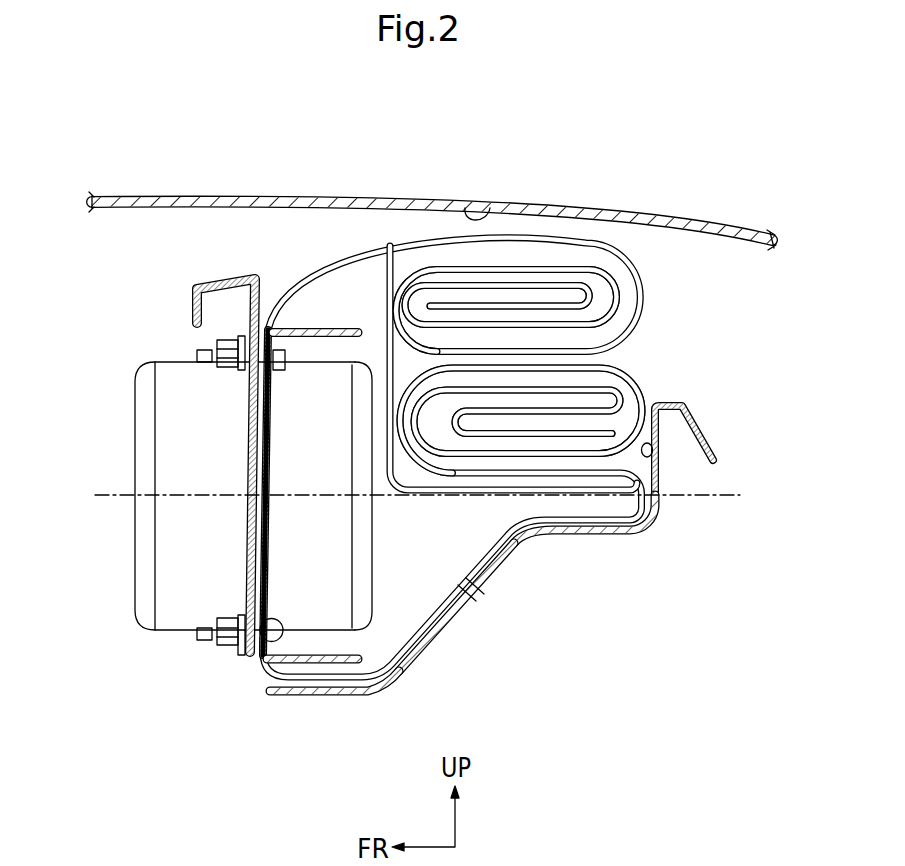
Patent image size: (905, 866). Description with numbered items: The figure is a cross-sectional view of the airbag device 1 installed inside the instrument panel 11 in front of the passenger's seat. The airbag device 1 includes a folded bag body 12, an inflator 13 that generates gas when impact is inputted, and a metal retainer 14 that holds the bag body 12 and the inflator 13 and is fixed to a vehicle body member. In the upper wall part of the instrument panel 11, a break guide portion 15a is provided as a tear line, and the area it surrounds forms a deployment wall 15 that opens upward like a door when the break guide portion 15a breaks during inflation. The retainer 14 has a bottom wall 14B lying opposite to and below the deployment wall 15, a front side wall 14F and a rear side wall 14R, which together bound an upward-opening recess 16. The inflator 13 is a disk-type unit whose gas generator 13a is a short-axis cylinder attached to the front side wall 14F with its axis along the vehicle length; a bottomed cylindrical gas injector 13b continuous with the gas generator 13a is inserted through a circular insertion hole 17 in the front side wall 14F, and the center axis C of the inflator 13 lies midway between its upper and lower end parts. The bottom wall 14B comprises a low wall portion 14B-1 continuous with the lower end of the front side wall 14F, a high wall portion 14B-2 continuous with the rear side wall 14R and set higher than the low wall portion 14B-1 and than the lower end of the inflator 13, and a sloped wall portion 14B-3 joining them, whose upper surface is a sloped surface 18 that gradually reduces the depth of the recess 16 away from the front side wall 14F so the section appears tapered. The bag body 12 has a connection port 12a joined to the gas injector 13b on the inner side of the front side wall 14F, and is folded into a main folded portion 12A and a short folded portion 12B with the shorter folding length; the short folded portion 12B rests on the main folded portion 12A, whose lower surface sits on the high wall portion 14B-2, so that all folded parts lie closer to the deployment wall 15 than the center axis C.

The airbag device 1 is at (423, 451).
The instrument panel 11 is at (456, 167).
The bag body 12 is at (405, 399).
The main folded portion 12A is at (636, 374).
The short folded portion 12B is at (644, 298).
The connection port 12a is at (242, 392).
The inflator 13 is at (190, 583).
The gas generator 13a is at (182, 616).
The gas injector 13b is at (304, 662).
The retainer 14 is at (447, 533).
The front side wall 14F is at (250, 317).
The rear side wall 14R is at (682, 407).
The bottom wall 14B is at (496, 657).
The low wall portion 14B-1 is at (362, 695).
The high wall portion 14B-2 is at (600, 535).
The sloped wall portion 14B-3 is at (448, 642).
The deployment wall 15 is at (432, 167).
The break guide portion 15a is at (482, 208).
The recess 16 is at (654, 453).
The insertion hole 17 is at (268, 657).
The sloped surface 18 is at (470, 590).
The center axis C is at (108, 493).